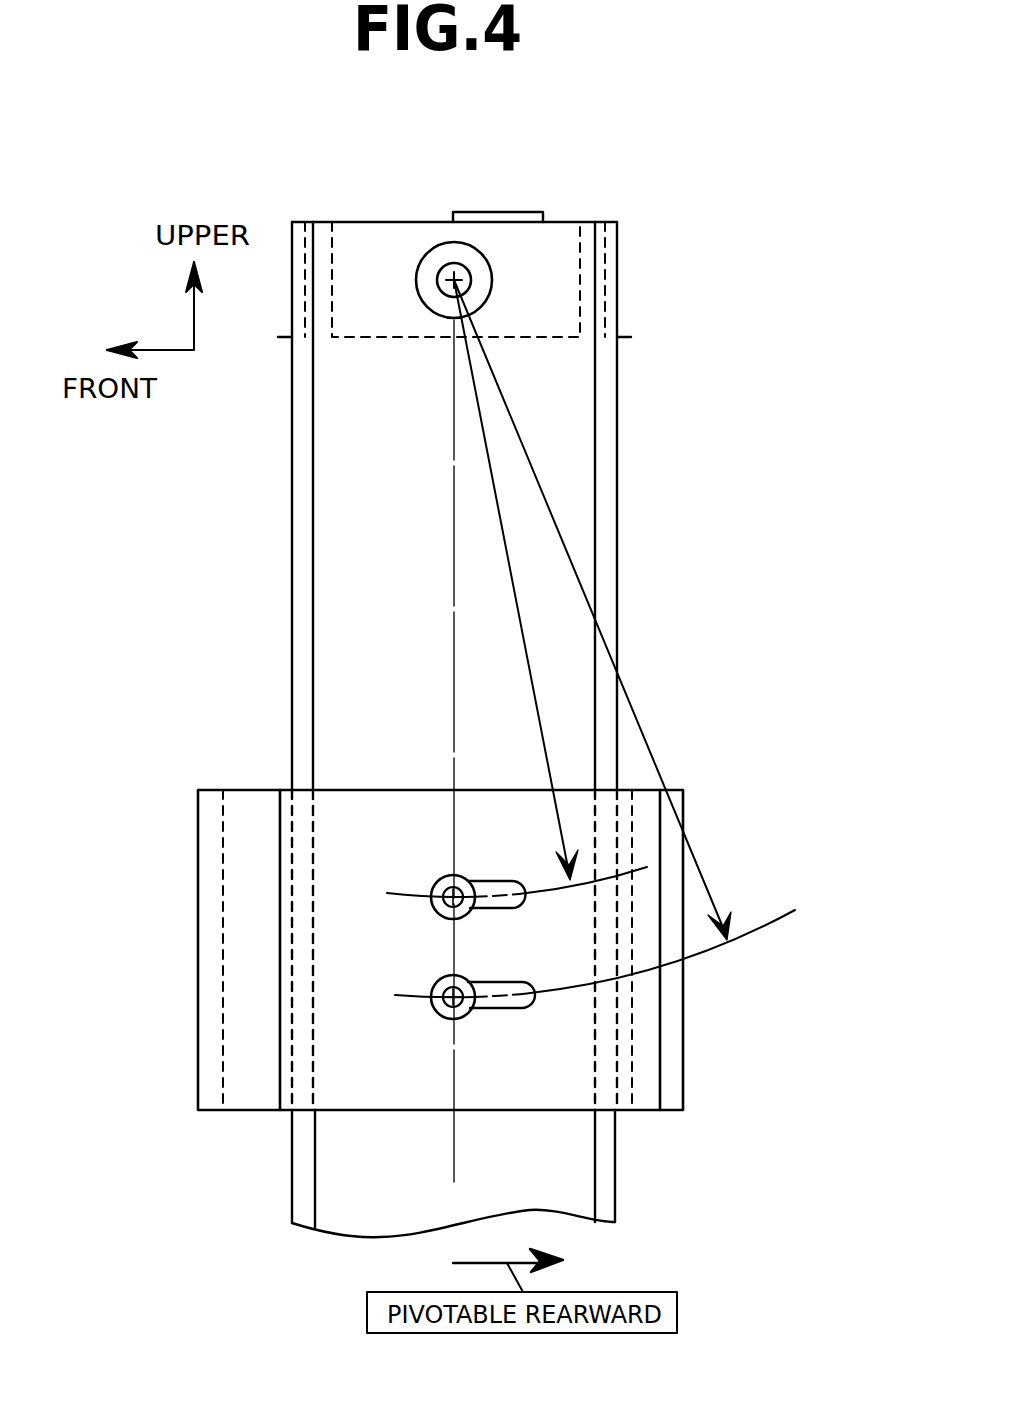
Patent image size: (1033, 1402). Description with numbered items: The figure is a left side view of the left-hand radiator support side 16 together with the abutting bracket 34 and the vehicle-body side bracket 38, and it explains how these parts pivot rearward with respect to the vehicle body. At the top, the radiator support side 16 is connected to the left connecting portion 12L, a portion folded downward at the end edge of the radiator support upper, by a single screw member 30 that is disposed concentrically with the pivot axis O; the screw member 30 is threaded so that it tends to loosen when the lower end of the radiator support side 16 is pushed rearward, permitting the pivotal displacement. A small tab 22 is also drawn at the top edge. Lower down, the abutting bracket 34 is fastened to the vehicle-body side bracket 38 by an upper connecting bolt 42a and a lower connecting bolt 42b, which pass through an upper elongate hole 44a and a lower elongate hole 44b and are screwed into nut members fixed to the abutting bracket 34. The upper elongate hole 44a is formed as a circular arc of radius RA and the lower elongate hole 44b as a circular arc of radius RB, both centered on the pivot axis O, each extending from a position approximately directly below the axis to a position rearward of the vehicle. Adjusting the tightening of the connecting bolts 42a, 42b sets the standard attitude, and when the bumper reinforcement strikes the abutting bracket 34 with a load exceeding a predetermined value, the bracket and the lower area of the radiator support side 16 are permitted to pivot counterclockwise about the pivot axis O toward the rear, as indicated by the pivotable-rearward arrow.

The left connecting portion 12L is at (373, 237).
The radiator support side 16 is at (357, 572).
The tab 22 is at (515, 212).
The screw member 30 is at (435, 262).
The pivot axis O is at (458, 283).
The abutting bracket 34 is at (178, 835).
The vehicle-body side bracket 38 is at (702, 825).
The radius RA is at (517, 588).
The radius RB is at (595, 638).
The upper connecting bolt 42a is at (437, 905).
The lower connecting bolt 42b is at (437, 1008).
The upper elongate hole 44a is at (512, 908).
The lower elongate hole 44b is at (508, 1010).